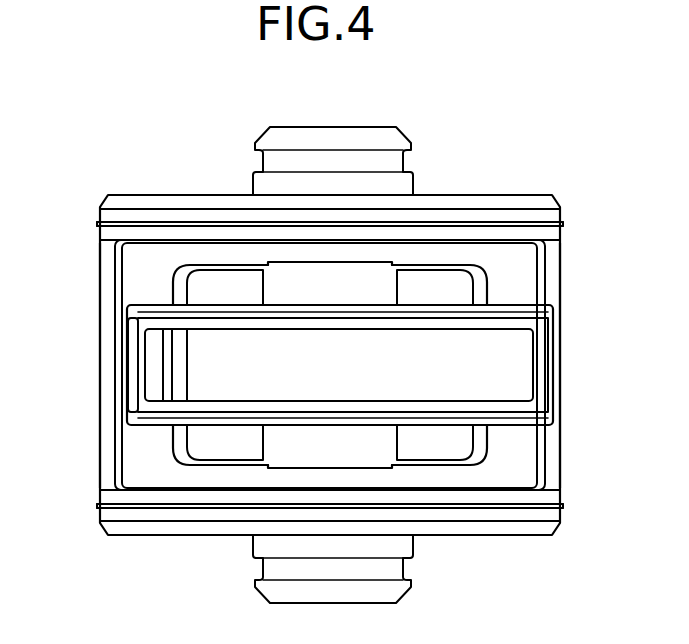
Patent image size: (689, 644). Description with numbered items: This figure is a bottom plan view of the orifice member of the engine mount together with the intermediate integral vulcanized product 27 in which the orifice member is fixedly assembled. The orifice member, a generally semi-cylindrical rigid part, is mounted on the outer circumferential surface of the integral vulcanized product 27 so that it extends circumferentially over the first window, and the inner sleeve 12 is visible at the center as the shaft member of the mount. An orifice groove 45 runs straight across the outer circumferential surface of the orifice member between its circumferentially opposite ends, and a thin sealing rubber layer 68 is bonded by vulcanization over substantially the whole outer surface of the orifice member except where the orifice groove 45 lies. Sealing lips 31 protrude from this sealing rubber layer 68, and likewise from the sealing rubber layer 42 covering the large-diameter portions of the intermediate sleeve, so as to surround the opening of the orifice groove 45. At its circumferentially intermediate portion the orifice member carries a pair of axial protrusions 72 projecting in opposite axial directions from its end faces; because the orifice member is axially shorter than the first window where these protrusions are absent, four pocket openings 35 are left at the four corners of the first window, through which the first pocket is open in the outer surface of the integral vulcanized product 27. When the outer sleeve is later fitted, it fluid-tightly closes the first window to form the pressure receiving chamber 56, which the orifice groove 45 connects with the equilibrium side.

The inner sleeve 12 is at (372, 126).
The intermediate integral vulcanized product 27 is at (492, 154).
The sealing lips 31 is at (108, 195).
The pocket openings 35 is at (225, 268).
The sealing rubber layer 42 is at (123, 515).
The orifice groove 45 is at (275, 330).
The pressure receiving chamber 56 is at (460, 296).
The sealing rubber layer 68 is at (143, 420).
The axial protrusions 72 is at (325, 277).